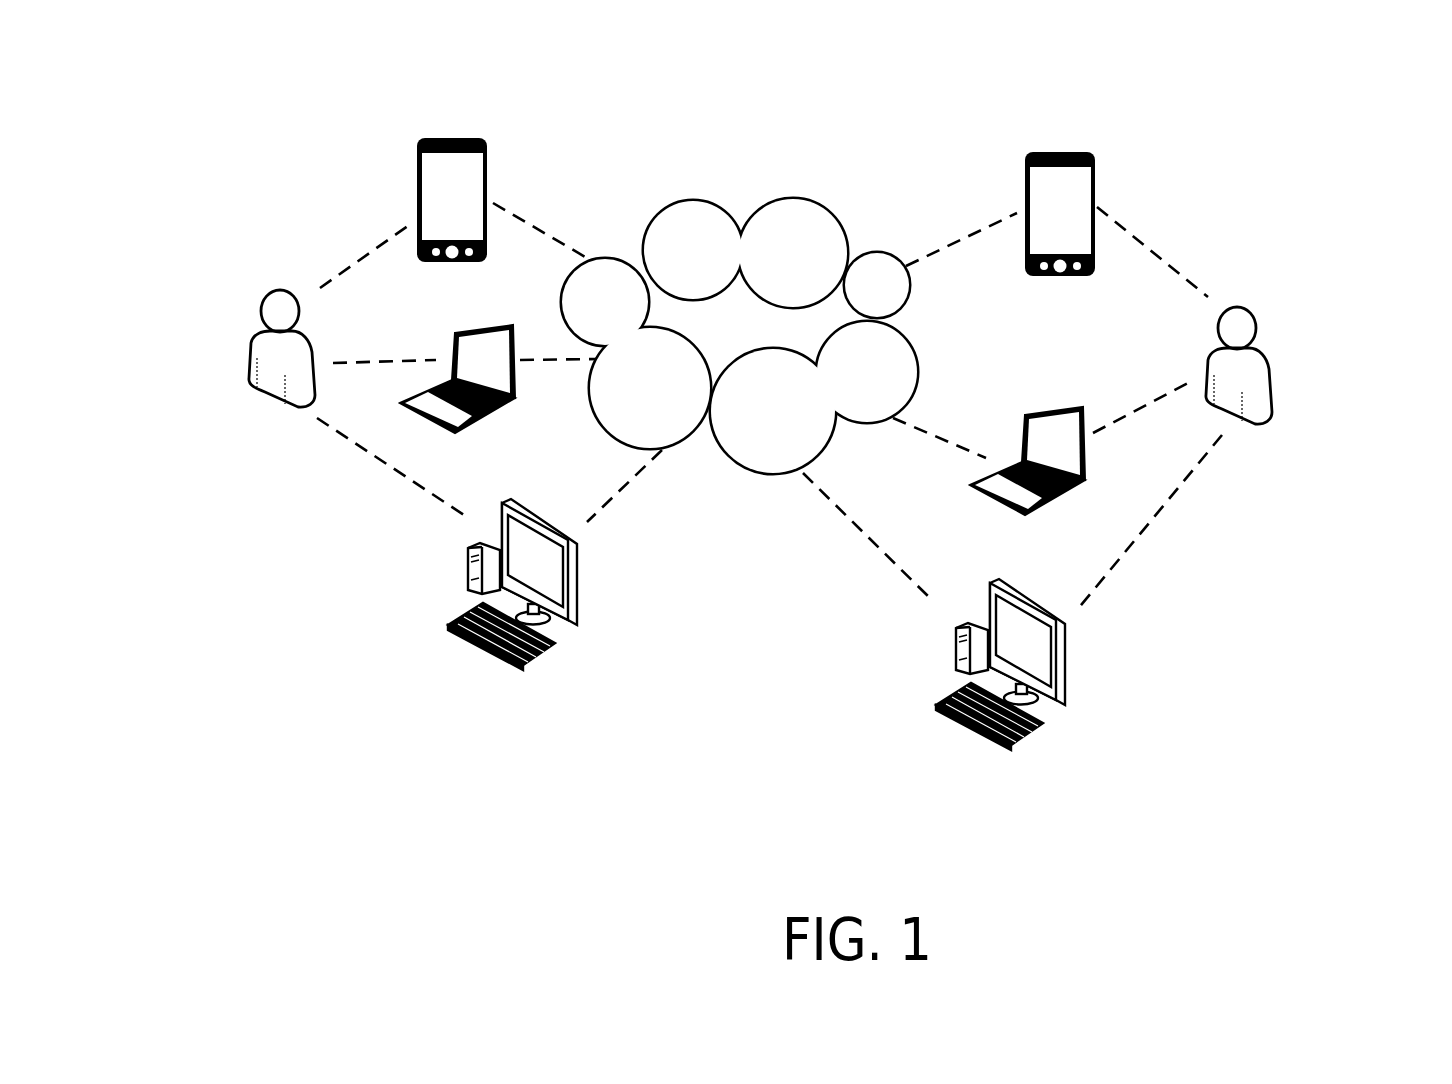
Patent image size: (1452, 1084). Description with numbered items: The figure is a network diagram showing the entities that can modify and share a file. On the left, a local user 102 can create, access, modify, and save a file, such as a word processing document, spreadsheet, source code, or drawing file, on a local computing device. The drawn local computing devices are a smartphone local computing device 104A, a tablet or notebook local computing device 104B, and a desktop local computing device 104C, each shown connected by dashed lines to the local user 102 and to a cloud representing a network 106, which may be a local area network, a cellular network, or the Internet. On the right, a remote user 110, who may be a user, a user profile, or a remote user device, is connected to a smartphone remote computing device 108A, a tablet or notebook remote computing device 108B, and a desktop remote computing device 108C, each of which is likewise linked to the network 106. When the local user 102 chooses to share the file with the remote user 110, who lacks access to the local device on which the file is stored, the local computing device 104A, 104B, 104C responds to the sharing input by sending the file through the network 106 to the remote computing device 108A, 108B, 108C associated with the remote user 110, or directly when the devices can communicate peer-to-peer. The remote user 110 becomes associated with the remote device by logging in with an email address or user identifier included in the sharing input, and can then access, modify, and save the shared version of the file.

The local user 102 is at (232, 370).
The smartphone local computing device 104A is at (456, 138).
The tablet or notebook local computing device 104B is at (495, 327).
The desktop local computing device 104C is at (473, 641).
The network 106 is at (760, 351).
The smartphone remote computing device 108A is at (1065, 152).
The tablet or notebook remote computing device 108B is at (1030, 410).
The desktop remote computing device 108C is at (962, 731).
The remote user 110 is at (1278, 380).